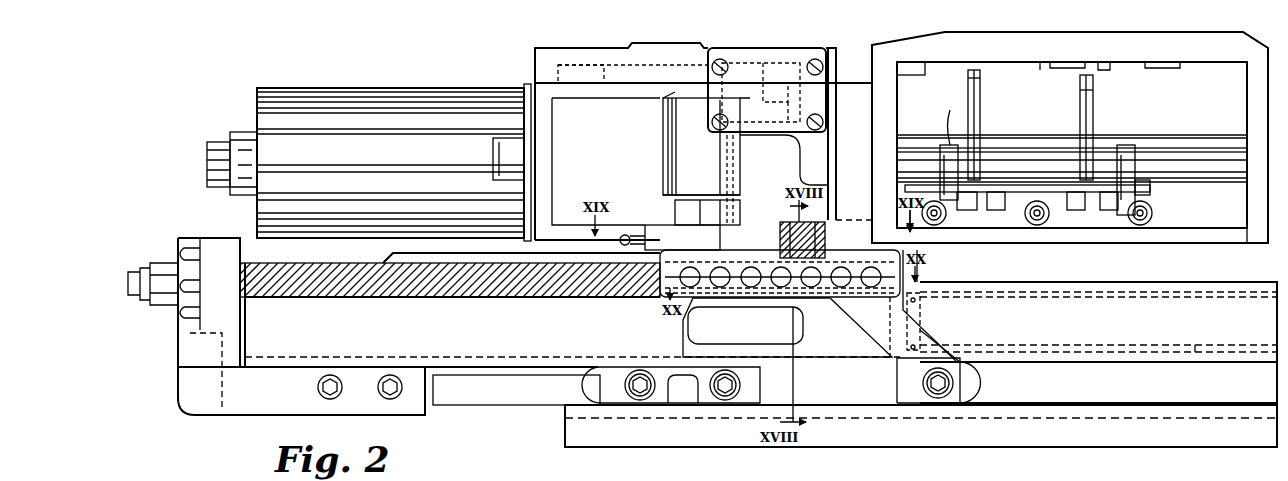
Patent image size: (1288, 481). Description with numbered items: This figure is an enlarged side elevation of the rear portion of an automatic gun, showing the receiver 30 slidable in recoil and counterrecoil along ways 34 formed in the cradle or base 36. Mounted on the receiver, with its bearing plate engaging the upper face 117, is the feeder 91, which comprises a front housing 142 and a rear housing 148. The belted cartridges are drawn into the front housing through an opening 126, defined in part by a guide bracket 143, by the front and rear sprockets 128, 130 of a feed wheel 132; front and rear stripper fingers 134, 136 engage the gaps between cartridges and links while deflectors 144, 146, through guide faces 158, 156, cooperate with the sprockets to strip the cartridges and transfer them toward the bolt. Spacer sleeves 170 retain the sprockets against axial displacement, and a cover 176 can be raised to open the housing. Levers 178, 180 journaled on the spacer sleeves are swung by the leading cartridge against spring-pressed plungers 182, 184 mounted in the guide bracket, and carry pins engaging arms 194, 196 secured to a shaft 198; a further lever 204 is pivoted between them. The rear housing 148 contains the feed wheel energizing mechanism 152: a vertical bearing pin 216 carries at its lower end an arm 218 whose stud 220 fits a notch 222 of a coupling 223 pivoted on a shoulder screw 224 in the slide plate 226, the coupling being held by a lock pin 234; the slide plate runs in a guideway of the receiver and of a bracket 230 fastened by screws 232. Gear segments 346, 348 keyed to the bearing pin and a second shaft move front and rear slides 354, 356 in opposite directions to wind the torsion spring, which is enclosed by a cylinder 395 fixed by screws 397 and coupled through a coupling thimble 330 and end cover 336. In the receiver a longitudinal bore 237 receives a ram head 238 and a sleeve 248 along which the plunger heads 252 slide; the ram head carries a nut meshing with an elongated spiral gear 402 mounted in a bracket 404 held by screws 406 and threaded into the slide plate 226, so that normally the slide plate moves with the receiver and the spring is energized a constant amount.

The receiver 30 is at (555, 333).
The ways 34 is at (590, 448).
The cradle or base 36 is at (1215, 440).
The feeder 91 is at (520, 68).
The upper face 117 is at (345, 262).
The opening 126 is at (1247, 190).
The front sprocket 128 is at (1093, 115).
The rear sprocket 130 is at (982, 112).
The feed wheel 132 is at (1112, 72).
The front stripper finger 134 is at (1035, 70).
The rear stripper finger 136 is at (975, 72).
The front housing 142 is at (1265, 70).
The guide bracket 143 is at (1120, 232).
The deflector 144 is at (1095, 68).
The deflector 146 is at (982, 80).
The rear housing 148 is at (775, 55).
The feed wheel energizing mechanism 152 is at (657, 193).
The guide face 156 is at (954, 117).
The guide face 158 is at (1093, 96).
The spacer sleeve 170 is at (1205, 135).
The cover 176 is at (1094, 44).
The lever 178 is at (1137, 145).
The lever 180 is at (935, 150).
The spring-pressed plunger 182 is at (1152, 213).
The spring-pressed plunger 184 is at (934, 225).
The arm 194 is at (1150, 188).
The arm 196 is at (945, 204).
The shaft 198 is at (1052, 222).
The lever 204 is at (1020, 195).
The vertical bearing pin 216 is at (680, 88).
The arm 218 is at (737, 196).
The stud 220 is at (786, 236).
The notch 222 is at (675, 224).
The coupling 223 is at (712, 240).
The shoulder screw 224 is at (822, 222).
The slide plate 226 is at (850, 318).
The bracket 230 is at (665, 318).
The screws 232 is at (650, 400).
The lock pin 234 is at (618, 242).
The longitudinal bore 237 is at (518, 352).
The ram head 238 is at (860, 357).
The sleeve 248 is at (1195, 352).
The head 252 is at (915, 352).
The coupling thimble 330 is at (216, 140).
The end cover 336 is at (243, 194).
The gear segment 346 is at (612, 63).
The gear segment 348 is at (580, 70).
The front slide 354 is at (808, 112).
The rear slide 356 is at (748, 88).
The cylinder 395 is at (392, 163).
The screws 397 is at (493, 152).
The elongated spiral gear 402 is at (357, 295).
The bracket 404 is at (240, 412).
The screws 406 is at (392, 400).